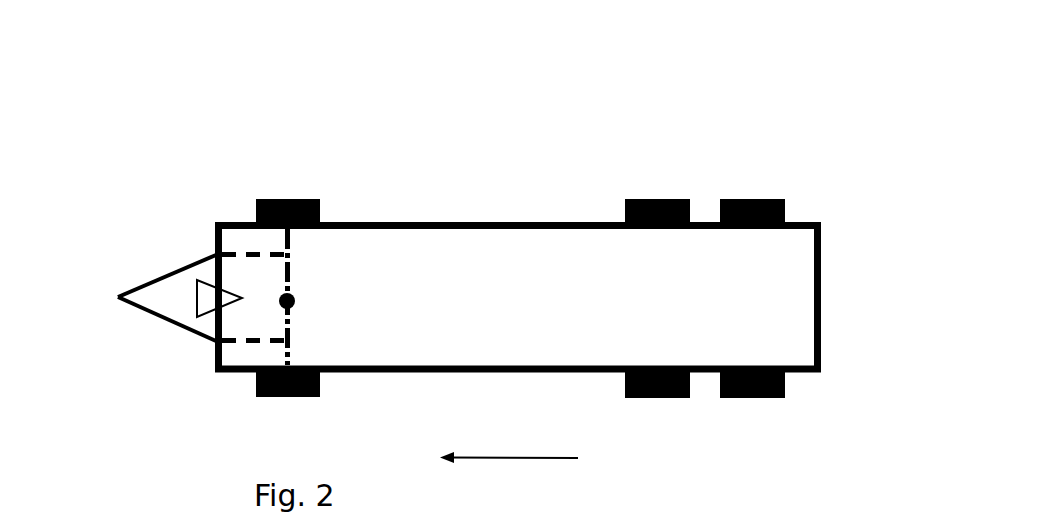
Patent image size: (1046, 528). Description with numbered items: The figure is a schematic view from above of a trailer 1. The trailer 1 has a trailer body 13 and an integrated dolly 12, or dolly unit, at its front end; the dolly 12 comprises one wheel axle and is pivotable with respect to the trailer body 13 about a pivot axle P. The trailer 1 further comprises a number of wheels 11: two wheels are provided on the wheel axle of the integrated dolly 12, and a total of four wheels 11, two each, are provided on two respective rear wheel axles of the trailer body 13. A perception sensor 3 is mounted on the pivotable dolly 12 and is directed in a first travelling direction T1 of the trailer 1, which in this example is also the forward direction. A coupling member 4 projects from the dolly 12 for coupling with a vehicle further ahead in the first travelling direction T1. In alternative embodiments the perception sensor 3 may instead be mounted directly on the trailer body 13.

The trailer 1 is at (512, 197).
The wheels 11 is at (298, 198).
The trailer body 13 is at (560, 222).
The perception sensor 3 is at (191, 301).
The coupling member 4 is at (118, 297).
The integrated dolly 12 is at (193, 332).
The pivot axle P is at (295, 302).
The first travelling direction T1 is at (488, 433).